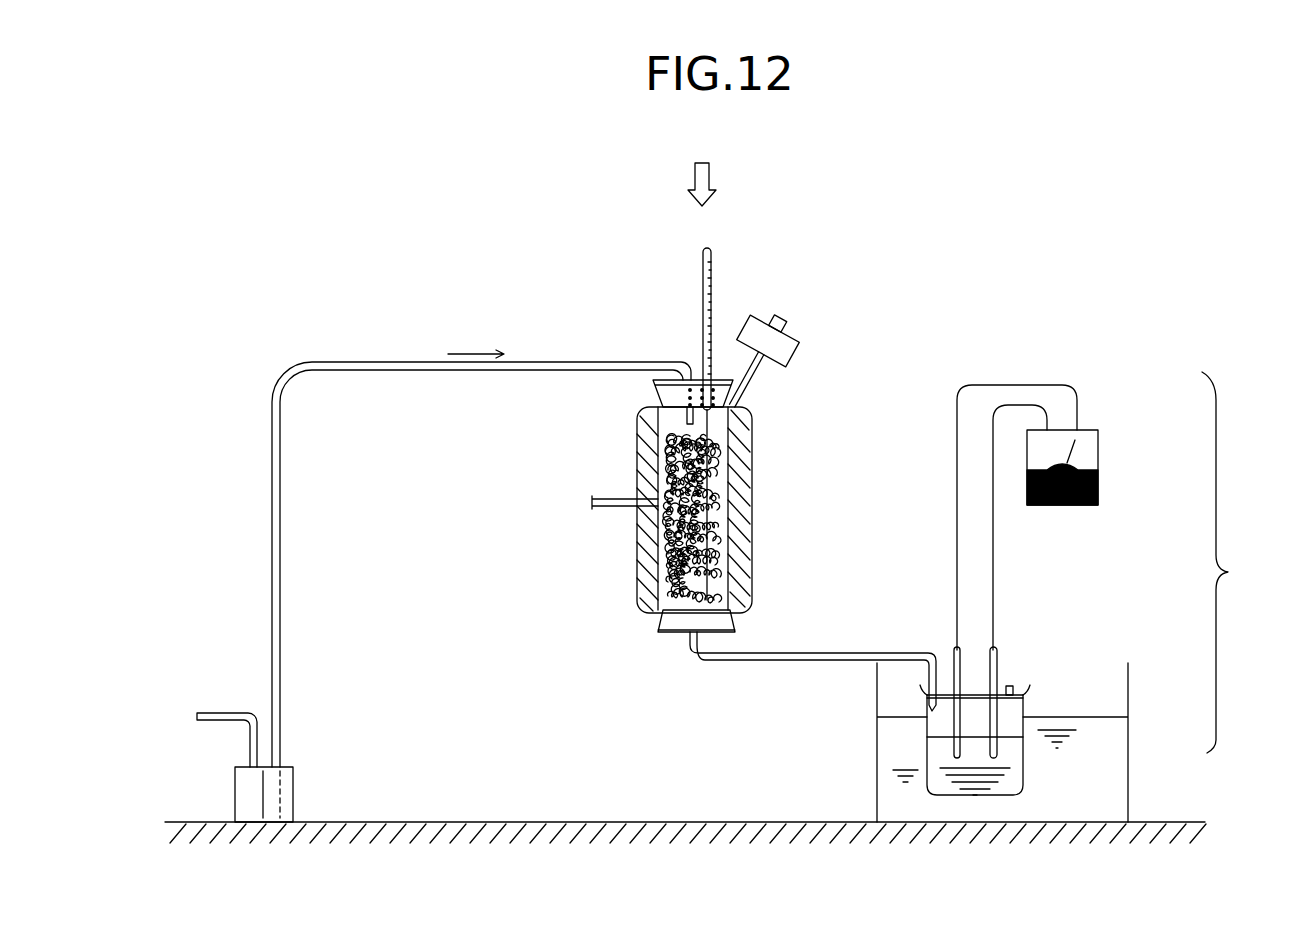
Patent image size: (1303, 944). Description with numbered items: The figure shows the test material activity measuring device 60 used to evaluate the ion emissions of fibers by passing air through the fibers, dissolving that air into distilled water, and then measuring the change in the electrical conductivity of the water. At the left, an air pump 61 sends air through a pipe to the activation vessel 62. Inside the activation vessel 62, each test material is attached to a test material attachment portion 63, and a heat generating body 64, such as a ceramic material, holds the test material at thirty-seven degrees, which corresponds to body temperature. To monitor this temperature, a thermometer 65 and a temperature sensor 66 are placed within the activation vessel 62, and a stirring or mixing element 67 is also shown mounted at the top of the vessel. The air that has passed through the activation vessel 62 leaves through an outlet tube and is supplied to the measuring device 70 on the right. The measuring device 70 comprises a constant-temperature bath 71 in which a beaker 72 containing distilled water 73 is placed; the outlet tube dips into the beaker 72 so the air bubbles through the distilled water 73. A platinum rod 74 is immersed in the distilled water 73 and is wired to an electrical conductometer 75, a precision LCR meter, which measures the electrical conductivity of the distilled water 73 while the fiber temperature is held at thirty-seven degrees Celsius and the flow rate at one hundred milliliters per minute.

The test material activity measuring device 60 is at (705, 162).
The air pump 61 is at (287, 780).
The activation vessel 62 is at (766, 495).
The test material attachment portion 63 is at (722, 572).
The heat generating body 64 is at (740, 425).
The thermometer 65 is at (710, 268).
The temperature sensor 66 is at (600, 497).
The stirrer 67 is at (782, 320).
The measuring device 70 is at (1248, 562).
The constant-temperature bath 71 is at (1128, 680).
The beaker 72 is at (1023, 700).
The distilled water 73 is at (1010, 760).
The platinum rod 74 is at (998, 653).
The electrical conductometer 75 is at (1098, 440).